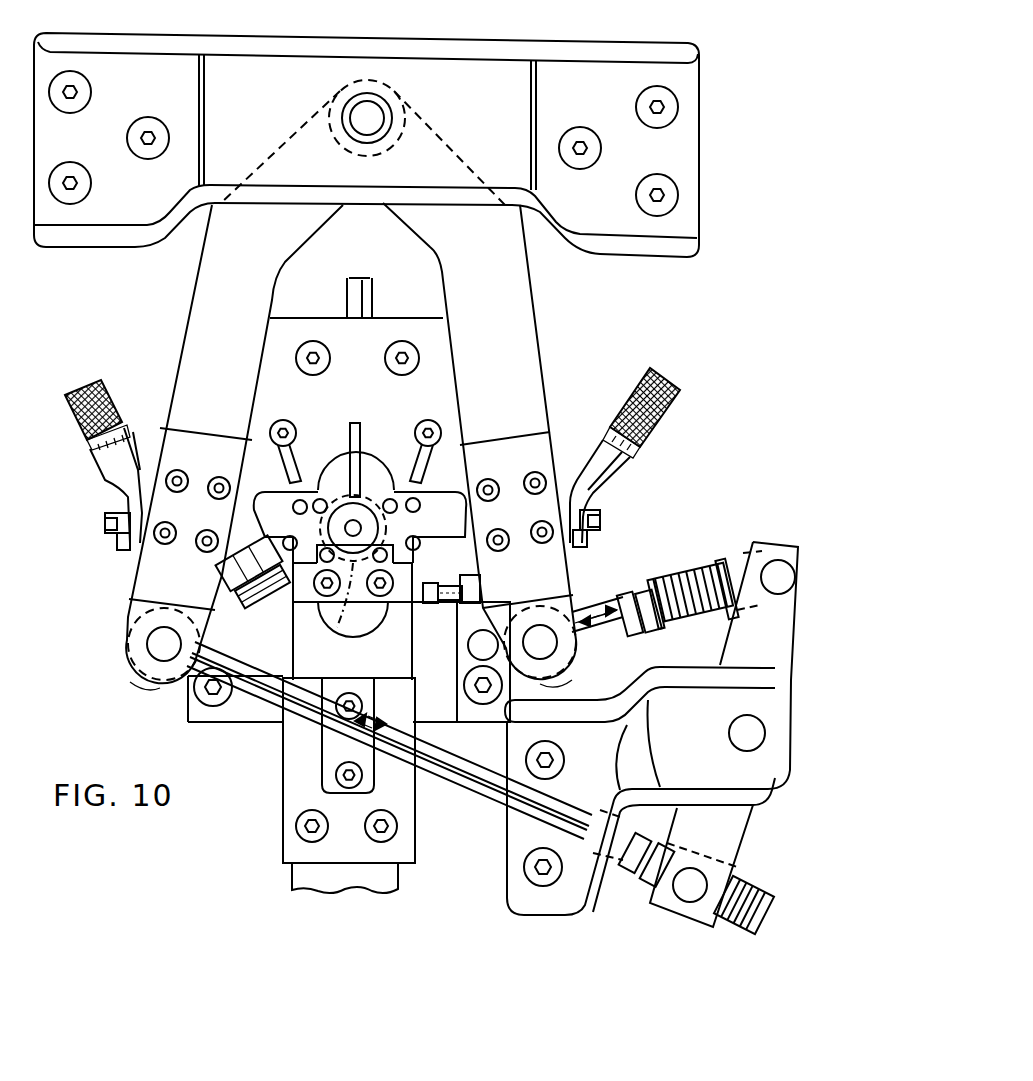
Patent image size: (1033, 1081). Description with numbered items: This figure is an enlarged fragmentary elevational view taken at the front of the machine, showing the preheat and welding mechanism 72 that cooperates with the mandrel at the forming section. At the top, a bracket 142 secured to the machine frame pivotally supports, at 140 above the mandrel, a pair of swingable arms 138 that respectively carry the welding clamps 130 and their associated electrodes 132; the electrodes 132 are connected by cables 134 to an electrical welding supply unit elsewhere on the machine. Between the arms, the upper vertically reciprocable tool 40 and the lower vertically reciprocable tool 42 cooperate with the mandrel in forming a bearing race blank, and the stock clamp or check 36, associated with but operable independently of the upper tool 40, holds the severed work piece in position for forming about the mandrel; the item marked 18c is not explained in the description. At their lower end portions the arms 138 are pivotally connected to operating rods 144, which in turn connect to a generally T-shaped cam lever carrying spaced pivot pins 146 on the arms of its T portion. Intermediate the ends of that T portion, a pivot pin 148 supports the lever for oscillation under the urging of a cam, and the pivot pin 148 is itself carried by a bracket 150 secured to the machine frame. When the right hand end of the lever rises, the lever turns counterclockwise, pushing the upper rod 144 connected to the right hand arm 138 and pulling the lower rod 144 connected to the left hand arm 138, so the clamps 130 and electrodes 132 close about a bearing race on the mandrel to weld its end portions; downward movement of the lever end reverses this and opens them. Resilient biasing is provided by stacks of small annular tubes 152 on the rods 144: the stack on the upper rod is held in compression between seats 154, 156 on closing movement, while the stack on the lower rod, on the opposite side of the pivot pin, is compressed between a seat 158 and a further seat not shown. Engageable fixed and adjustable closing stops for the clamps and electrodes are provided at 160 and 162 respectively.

The welding mechanism 72 is at (584, 357).
The bracket 142 is at (272, 46).
The pivot 140 is at (385, 104).
The swingable arms 138 is at (202, 293).
The welding clamps 130 is at (240, 436).
The electrodes 132 is at (226, 558).
The cables 134 is at (86, 421).
The upper vertically reciprocable tool 40 is at (356, 339).
The stock clamp or check 36 is at (362, 442).
The shaft section 18c is at (360, 548).
The lower vertically reciprocable tool 42 is at (349, 728).
The fixed closing stop 160 is at (252, 608).
The adjustable closing stop 162 is at (436, 605).
The operating rods 144 is at (588, 613).
The seat 154 is at (655, 580).
The seat 156 is at (723, 560).
The stacks of annular tubes 152 is at (713, 554).
The pivot pins 146 is at (775, 567).
The pivot pin 148 is at (730, 732).
The bracket 150 is at (543, 915).
The seat 158 is at (713, 915).